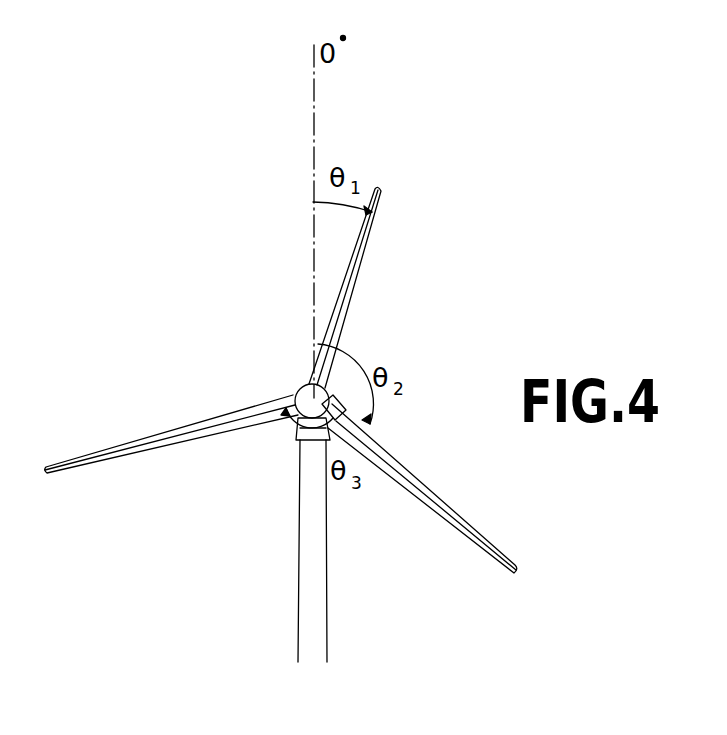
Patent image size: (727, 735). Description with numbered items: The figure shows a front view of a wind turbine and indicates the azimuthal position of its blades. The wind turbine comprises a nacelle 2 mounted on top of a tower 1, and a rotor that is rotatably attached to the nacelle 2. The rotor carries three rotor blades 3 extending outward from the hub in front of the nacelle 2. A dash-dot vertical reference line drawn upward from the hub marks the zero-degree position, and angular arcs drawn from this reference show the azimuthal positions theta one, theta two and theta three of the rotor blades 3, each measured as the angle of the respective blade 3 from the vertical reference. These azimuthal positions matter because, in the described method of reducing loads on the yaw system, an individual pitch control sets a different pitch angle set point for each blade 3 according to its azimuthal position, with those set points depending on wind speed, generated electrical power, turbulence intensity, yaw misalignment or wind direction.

The tower 1 is at (312, 548).
The nacelle 2 is at (297, 432).
The rotor blades 3 is at (353, 260).